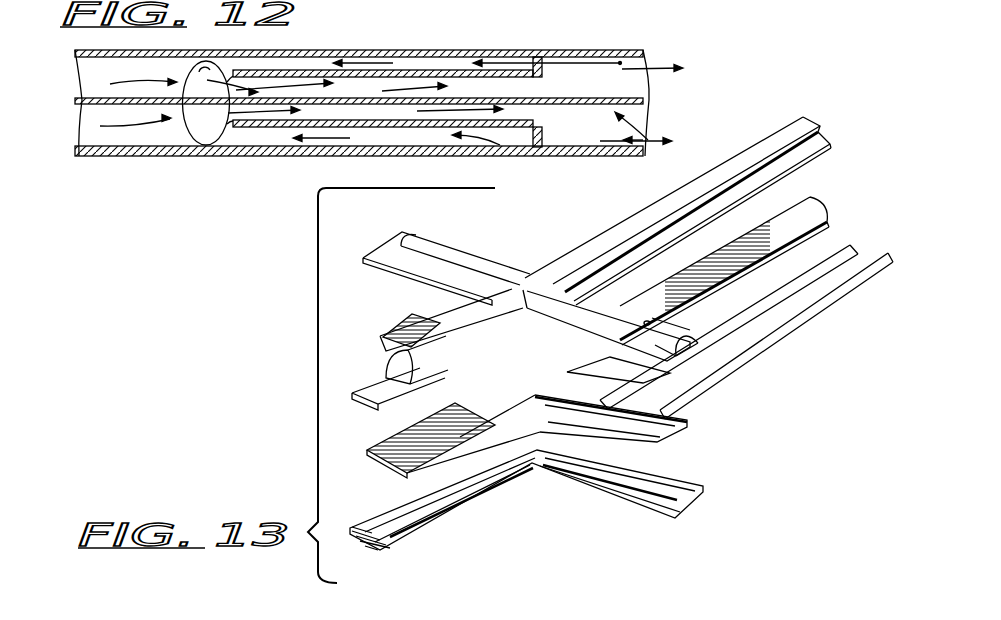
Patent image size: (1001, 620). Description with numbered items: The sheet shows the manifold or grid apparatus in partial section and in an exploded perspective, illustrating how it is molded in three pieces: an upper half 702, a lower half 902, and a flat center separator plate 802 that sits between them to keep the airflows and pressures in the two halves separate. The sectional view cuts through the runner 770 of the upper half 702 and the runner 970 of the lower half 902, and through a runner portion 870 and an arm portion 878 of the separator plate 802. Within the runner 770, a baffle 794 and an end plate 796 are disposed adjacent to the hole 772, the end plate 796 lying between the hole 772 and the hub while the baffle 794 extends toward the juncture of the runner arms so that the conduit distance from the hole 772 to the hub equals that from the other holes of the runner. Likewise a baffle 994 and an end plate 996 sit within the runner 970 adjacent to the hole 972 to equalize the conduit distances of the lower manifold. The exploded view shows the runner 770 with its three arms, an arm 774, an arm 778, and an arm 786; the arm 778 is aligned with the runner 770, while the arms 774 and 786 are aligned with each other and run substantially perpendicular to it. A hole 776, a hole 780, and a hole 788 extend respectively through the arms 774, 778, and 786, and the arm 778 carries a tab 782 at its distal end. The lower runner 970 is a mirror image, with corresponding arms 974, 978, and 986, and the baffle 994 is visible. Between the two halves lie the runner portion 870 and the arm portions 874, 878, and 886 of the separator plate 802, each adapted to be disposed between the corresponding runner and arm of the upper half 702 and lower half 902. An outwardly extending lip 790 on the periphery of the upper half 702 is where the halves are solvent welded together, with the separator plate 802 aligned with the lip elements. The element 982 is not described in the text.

In FIG. 12, the upper half 702 is at (653, 51).
In FIG. 13, the upper half 702 is at (707, 196).
In FIG. 12, the runner 770 is at (371, 50).
In FIG. 13, the runner 770 is at (542, 284).
In FIG. 12, the hole 772 is at (508, 55).
In FIG. 13, the hole 772 is at (639, 217).
In FIG. 13, the arm 774 is at (587, 320).
In FIG. 13, the hole 776 is at (678, 312).
In FIG. 12, the arm 778 is at (158, 50).
In FIG. 13, the arm 778 is at (392, 368).
In FIG. 13, the hole 780 is at (420, 343).
In FIG. 13, the tab 782 is at (372, 391).
In FIG. 12, the arm 786 is at (212, 62).
In FIG. 13, the arm 786 is at (480, 265).
In FIG. 13, the hole 788 is at (413, 239).
In FIG. 13, the exterior flange or lip 790 is at (824, 134).
In FIG. 12, the baffle 794 is at (447, 63).
In FIG. 12, the end plate 796 is at (543, 72).
In FIG. 12, the separator plate 802 is at (645, 124).
In FIG. 13, the separator plate 802 is at (838, 226).
In FIG. 12, the runner portion 870 is at (648, 99).
In FIG. 13, the runner portion 870 is at (810, 200).
In FIG. 13, the arm portion 874 is at (668, 421).
In FIG. 12, the arm portion 878 is at (88, 98).
In FIG. 13, the arm portion 878 is at (406, 455).
In FIG. 13, the arm portion 886 is at (405, 328).
In FIG. 12, the lower half 902 is at (140, 170).
In FIG. 13, the lower half 902 is at (862, 292).
In FIG. 12, the runner 970 is at (391, 104).
In FIG. 13, the runner 970 is at (765, 320).
In FIG. 12, the hole 972 is at (505, 147).
In FIG. 13, the arm 974 is at (637, 507).
In FIG. 12, the arm 978 is at (94, 157).
In FIG. 13, the arm 978 is at (493, 497).
In FIG. 13, the plate end 982 is at (373, 538).
In FIG. 13, the arm 986 is at (396, 443).
In FIG. 12, the baffle 994 is at (397, 128).
In FIG. 13, the baffle 994 is at (652, 382).
In FIG. 12, the end plate 996 is at (543, 129).